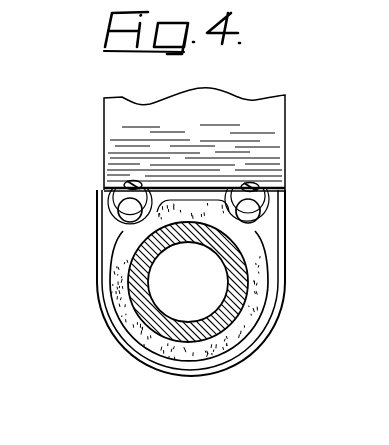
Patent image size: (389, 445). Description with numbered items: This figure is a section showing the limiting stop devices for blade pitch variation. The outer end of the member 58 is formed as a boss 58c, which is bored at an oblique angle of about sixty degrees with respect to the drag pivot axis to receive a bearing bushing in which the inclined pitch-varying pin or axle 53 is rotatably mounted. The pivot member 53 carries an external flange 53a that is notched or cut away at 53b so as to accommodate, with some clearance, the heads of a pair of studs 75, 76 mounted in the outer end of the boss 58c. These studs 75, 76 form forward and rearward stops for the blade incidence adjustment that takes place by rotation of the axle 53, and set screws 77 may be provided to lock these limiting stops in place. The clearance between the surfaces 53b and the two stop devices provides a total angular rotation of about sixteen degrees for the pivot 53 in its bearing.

The member 58 is at (262, 117).
The boss 58c is at (208, 366).
The pitch-varying pin or axle 53 is at (247, 271).
The external flange 53a is at (250, 320).
The notched or cut-away surfaces 53b is at (107, 232).
The stud 75 is at (261, 212).
The stud 76 is at (118, 211).
The set screws 77 is at (126, 183).